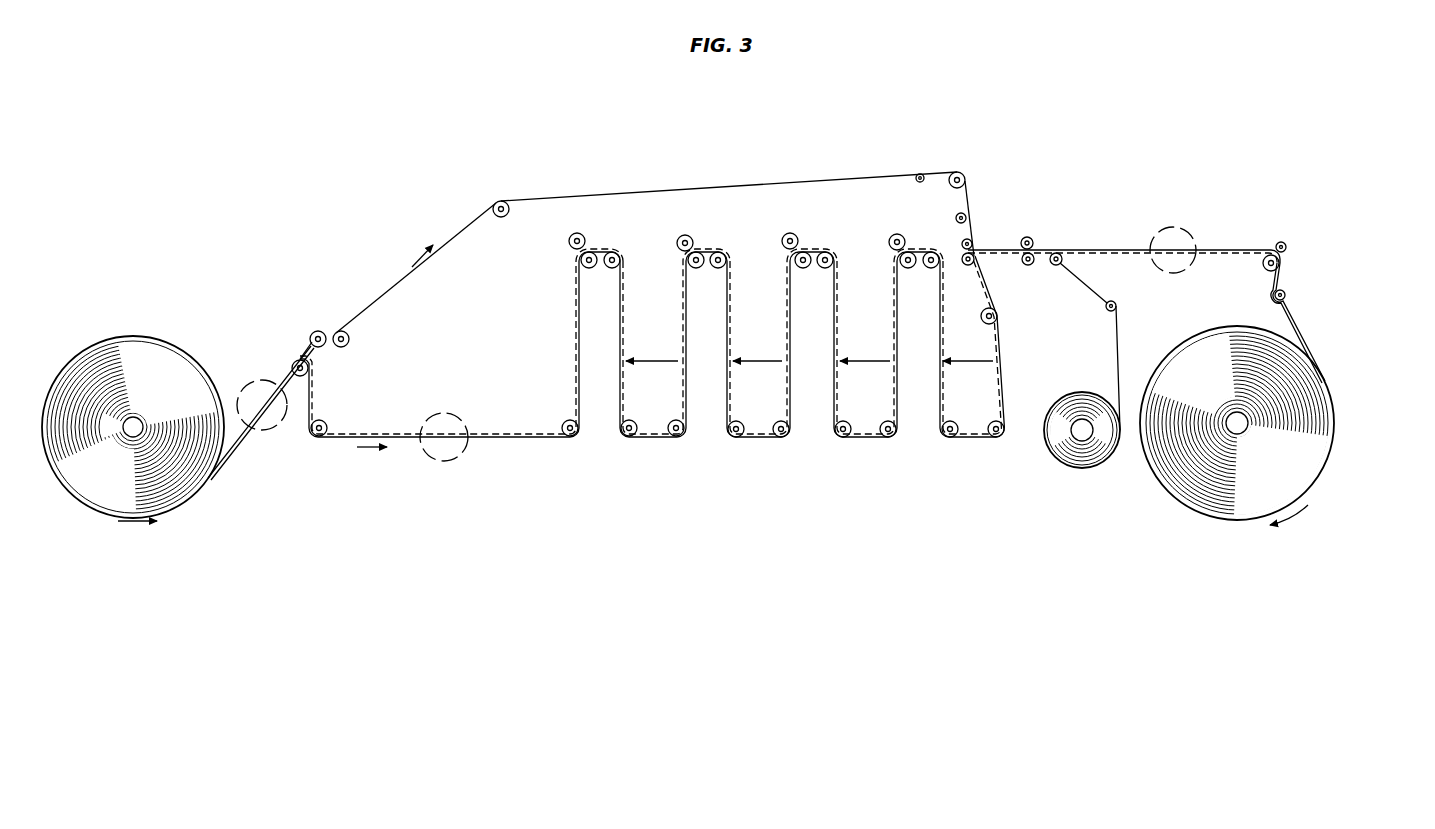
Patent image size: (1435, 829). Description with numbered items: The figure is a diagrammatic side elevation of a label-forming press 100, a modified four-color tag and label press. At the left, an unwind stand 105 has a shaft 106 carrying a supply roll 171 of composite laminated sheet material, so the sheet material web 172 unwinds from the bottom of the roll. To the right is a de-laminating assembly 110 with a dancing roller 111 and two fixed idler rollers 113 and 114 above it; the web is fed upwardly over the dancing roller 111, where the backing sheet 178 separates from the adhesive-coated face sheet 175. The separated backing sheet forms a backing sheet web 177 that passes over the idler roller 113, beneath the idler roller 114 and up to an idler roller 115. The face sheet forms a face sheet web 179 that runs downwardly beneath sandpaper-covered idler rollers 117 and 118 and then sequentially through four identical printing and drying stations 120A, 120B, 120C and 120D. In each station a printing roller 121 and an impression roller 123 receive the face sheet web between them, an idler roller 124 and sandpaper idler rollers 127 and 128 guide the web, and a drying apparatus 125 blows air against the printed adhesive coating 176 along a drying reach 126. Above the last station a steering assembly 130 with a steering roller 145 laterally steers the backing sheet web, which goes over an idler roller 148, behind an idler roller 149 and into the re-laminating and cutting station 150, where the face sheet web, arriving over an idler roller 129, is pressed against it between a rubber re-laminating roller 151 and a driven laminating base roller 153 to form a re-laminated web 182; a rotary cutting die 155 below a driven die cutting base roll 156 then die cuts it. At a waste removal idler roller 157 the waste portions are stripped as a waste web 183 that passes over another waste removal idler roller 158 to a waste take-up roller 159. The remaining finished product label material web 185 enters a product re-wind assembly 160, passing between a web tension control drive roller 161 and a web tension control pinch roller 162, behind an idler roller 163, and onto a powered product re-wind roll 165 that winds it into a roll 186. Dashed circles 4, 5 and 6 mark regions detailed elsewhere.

The label-forming press 100 is at (393, 151).
The unwind stand 105 is at (133, 388).
The shaft 106 is at (147, 417).
The de-laminating assembly 110 is at (317, 320).
The dancing roller 111 is at (308, 370).
The fixed idler roller 113 is at (311, 335).
The fixed idler roller 114 is at (344, 331).
The idler roller 115 is at (501, 220).
The sandpaper idler roller 117 is at (328, 432).
The sandpaper idler roller 118 is at (564, 422).
The printing and drying station 120A is at (654, 340).
The printing and drying station 120B is at (760, 220).
The printing and drying station 120C is at (870, 220).
The printing and drying station 120D is at (956, 313).
The printing roller 121 is at (570, 236).
The impression roller 123 is at (583, 265).
The idler roller 124 is at (618, 265).
The drying apparatus 125 is at (650, 333).
The drying reach 126 is at (616, 400).
The sandpaper idler roller 127 is at (633, 434).
The sandpaper idler roller 128 is at (670, 421).
The idler roller 129 is at (981, 318).
The steering assembly 130 is at (938, 188).
The steering roller 145 is at (916, 176).
The idler roller 148 is at (965, 178).
The idler roller 149 is at (965, 216).
The re-laminating and cutting station 150 is at (1124, 313).
The rubber re-laminating roller 151 is at (971, 245).
The driven laminating base roller 153 is at (974, 263).
The rotary cutting die 155 is at (1029, 266).
The driven die cutting base roll 156 is at (1033, 243).
The waste removal idler roller 157 is at (1060, 265).
The waste removal idler roller 158 is at (1107, 308).
The waste take-up roller 159 is at (1078, 437).
The product re-wind assembly 160 is at (1272, 374).
The web tension control drive roller 161 is at (1265, 270).
The web tension control pinch roller 162 is at (1287, 246).
The idler roller 163 is at (1286, 297).
The product re-wind roll 165 is at (1230, 417).
The supply roll 171 is at (185, 352).
The sheet material web 172 is at (243, 438).
The face sheet 175 is at (461, 367).
The adhesive coating 176 is at (503, 432).
The backing sheet web 177 is at (595, 195).
The backing sheet 178 is at (412, 280).
The face sheet web 179 is at (578, 330).
The re-laminated web 182 is at (1008, 248).
The waste web 183 is at (1122, 355).
The finished product label material web 185 is at (1238, 249).
The roll 186 is at (1232, 436).
The detail circle FIG. 4 is at (257, 380).
The detail circle FIG. 5 is at (443, 462).
The detail circle FIG. 6 is at (1187, 231).